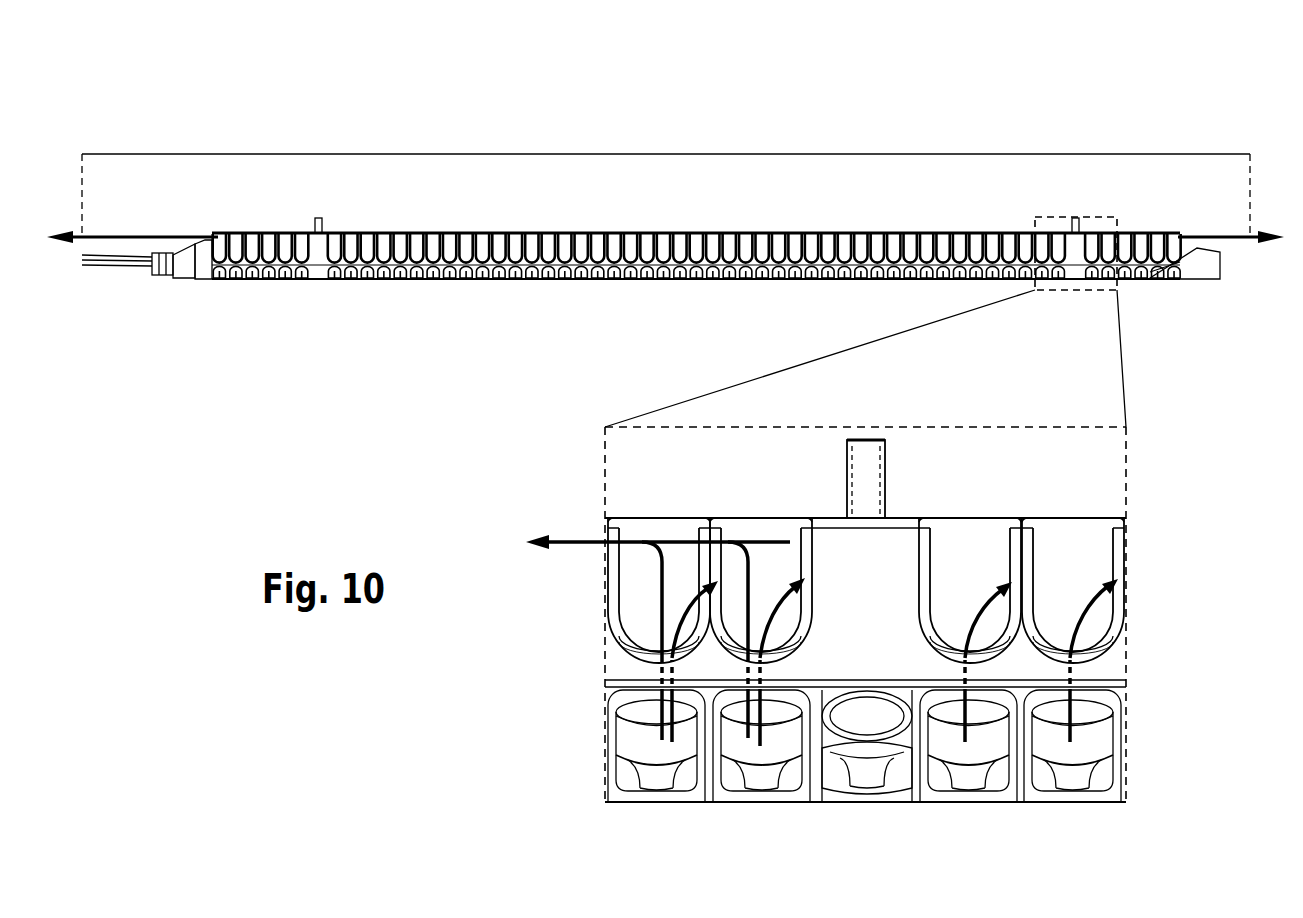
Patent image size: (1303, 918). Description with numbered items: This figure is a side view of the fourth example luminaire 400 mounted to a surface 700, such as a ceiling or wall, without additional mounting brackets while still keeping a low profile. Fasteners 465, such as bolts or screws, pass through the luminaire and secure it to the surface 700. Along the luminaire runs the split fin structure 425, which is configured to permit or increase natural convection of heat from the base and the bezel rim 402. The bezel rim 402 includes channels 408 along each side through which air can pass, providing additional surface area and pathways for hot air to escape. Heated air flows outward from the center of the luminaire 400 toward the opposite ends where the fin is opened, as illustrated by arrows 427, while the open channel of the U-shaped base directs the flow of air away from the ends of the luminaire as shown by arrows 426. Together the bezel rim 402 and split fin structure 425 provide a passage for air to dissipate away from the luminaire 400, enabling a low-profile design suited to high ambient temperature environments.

The surface 700 is at (657, 185).
The arrows 426 is at (118, 243).
The bezel rim 402 is at (188, 262).
The fourth example luminaire 400 is at (651, 290).
The split fin structure 425 is at (586, 291).
The fasteners 465 is at (862, 462).
The arrows 427 is at (655, 598).
The channels 408 is at (635, 745).